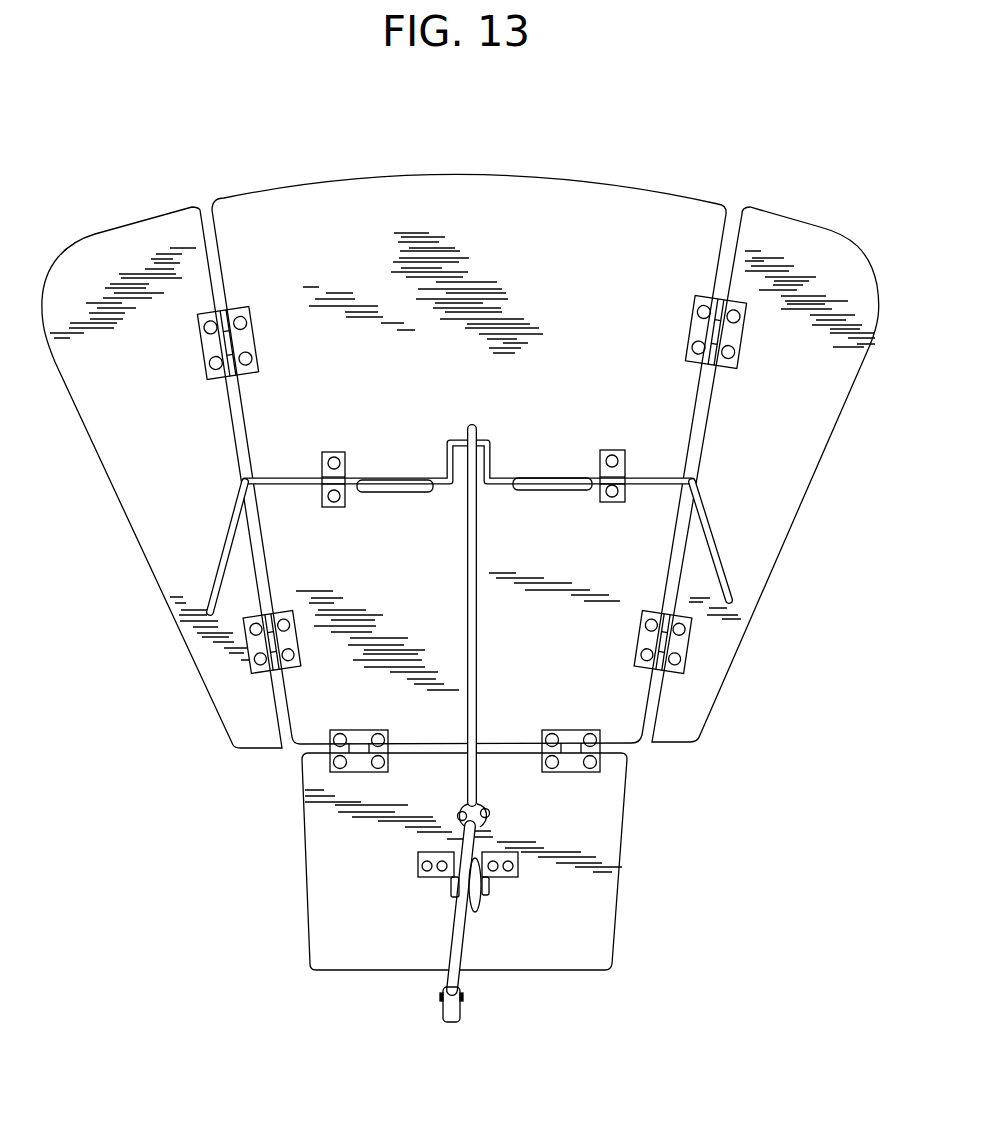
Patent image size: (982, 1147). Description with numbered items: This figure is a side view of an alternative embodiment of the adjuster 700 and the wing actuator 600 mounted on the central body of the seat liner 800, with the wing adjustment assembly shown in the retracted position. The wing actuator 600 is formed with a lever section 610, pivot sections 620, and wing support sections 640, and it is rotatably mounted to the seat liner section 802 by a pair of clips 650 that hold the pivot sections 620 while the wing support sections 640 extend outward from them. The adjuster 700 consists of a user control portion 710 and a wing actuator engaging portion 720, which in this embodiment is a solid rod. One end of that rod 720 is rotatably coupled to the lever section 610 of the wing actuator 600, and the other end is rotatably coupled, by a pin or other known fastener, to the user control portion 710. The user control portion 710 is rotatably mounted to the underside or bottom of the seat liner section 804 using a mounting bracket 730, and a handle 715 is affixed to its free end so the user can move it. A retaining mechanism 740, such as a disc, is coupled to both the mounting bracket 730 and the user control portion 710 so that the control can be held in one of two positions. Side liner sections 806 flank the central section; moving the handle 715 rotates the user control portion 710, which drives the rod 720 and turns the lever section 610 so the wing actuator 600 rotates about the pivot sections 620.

The seat liner 800 is at (460, 519).
The seat liner section 802 is at (366, 252).
The seat liner section 804 is at (588, 813).
The side panel 806 is at (170, 407).
The wing actuator 600 is at (466, 517).
The lever section 610 is at (462, 446).
The pivot sections 620 is at (283, 477).
The wing support sections 640 is at (227, 538).
The clips 650 is at (333, 502).
The wing actuator engaging portion 720 is at (479, 628).
The adjuster 700 is at (504, 945).
The user control portion 710 is at (463, 925).
The handle 715 is at (458, 1023).
The mounting bracket 730 is at (520, 873).
The retaining mechanism 740 is at (485, 893).